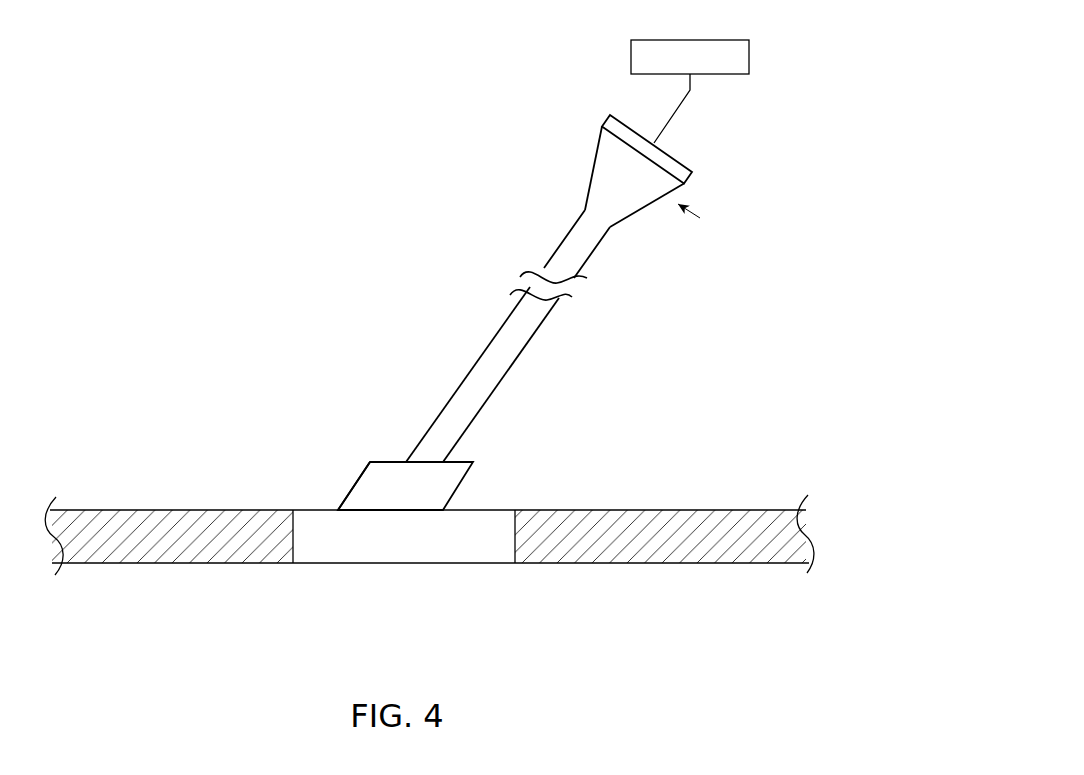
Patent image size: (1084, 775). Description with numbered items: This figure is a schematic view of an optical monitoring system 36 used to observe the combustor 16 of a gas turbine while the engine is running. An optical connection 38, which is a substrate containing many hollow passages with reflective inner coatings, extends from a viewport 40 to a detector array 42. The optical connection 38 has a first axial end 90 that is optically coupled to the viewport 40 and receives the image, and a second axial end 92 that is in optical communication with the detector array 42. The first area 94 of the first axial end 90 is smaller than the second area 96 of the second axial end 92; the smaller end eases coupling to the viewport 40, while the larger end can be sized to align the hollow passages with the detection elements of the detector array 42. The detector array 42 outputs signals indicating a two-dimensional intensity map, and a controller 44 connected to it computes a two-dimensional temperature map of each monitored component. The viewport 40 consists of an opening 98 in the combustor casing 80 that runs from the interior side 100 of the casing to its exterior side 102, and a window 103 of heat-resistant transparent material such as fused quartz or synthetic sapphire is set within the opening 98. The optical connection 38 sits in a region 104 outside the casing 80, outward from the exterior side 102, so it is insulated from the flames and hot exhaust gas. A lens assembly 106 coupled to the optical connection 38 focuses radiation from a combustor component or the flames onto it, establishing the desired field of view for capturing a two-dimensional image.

The combustor 16 is at (429, 510).
The optical monitoring system 36 is at (561, 268).
The optical connection 38 is at (497, 336).
The viewport 40 is at (316, 483).
The detector array 42 is at (676, 158).
The controller 44 is at (749, 59).
The combustor casing 80 is at (608, 533).
The first axial end 90 is at (395, 441).
The second axial end 92 is at (673, 222).
The first area 94 is at (441, 411).
The second area 96 is at (594, 137).
The opening 98 is at (506, 574).
The interior side 100 is at (401, 575).
The exterior side 102 is at (498, 492).
The window 103 is at (460, 553).
The region 104 is at (350, 446).
The lens assembly 106 is at (468, 430).